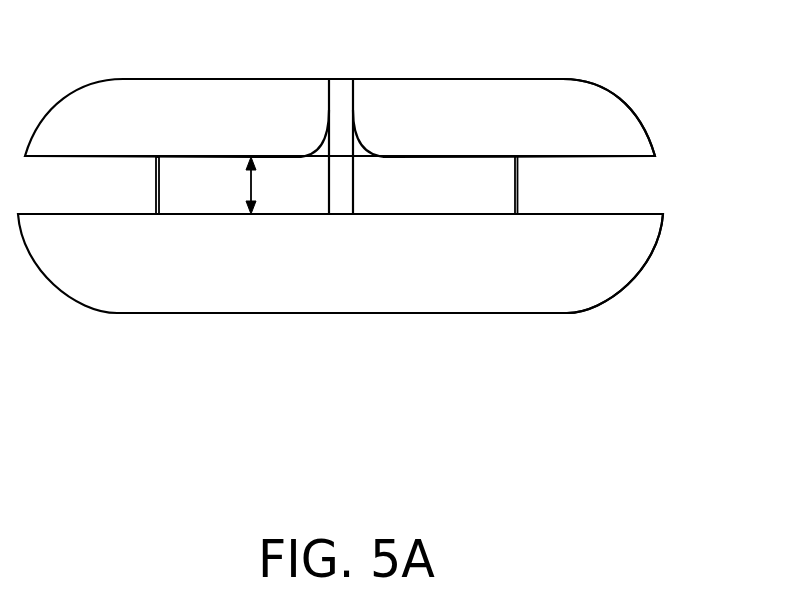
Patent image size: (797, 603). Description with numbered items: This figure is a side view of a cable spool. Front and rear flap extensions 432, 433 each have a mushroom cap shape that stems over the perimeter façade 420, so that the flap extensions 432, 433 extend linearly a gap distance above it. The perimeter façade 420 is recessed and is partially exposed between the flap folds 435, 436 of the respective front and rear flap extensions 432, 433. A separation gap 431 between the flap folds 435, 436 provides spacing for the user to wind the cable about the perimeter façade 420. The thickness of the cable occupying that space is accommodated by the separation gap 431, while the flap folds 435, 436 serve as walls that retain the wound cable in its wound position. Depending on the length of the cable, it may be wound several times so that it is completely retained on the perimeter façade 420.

The perimeter façade 420 is at (156, 175).
The separation gap 431 is at (248, 182).
The front flap extension 432 is at (602, 110).
The rear flap extension 433 is at (600, 272).
The flap fold 435 is at (646, 134).
The flap fold 436 is at (645, 232).